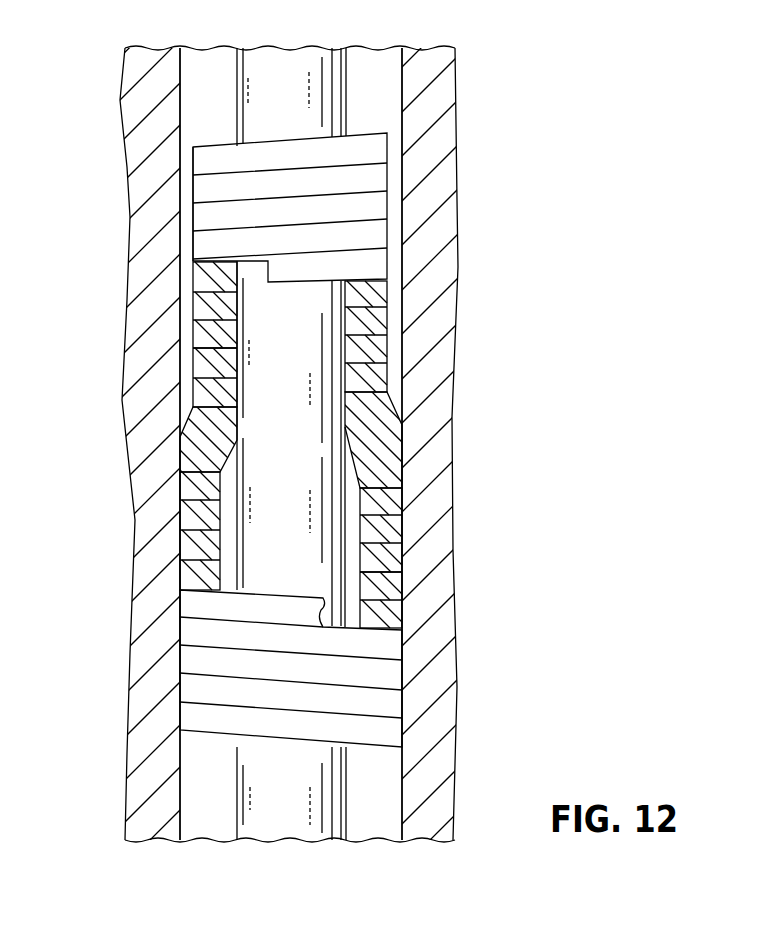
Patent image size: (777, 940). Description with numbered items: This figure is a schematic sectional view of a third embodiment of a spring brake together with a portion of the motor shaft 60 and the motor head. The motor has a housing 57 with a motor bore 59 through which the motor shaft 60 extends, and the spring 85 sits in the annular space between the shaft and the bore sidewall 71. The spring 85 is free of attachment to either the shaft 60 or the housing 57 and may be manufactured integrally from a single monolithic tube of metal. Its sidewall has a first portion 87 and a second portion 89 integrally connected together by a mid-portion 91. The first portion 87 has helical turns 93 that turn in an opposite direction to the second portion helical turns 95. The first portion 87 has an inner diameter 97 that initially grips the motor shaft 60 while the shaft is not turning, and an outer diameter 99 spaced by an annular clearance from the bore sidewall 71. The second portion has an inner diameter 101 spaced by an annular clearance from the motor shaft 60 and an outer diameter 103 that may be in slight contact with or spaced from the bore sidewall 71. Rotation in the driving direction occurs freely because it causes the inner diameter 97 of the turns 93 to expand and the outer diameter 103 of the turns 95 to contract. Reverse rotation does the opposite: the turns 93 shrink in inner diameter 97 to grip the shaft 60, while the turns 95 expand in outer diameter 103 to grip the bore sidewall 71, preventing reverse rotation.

The housing 57 is at (137, 235).
The motor bore 59 is at (393, 100).
The motor shaft 60 is at (288, 88).
The spring 85 is at (190, 153).
The first portion 87 is at (188, 278).
The bore sidewall 71 is at (186, 325).
The mid-portion 91 is at (180, 450).
The second portion 89 is at (175, 507).
The first portion helical turns 93 is at (380, 292).
The inner diameter 97 is at (340, 318).
The outer diameter 99 is at (383, 345).
The inner diameter 101 is at (362, 540).
The outer diameter 103 is at (405, 552).
The second portion helical turns 95 is at (385, 645).